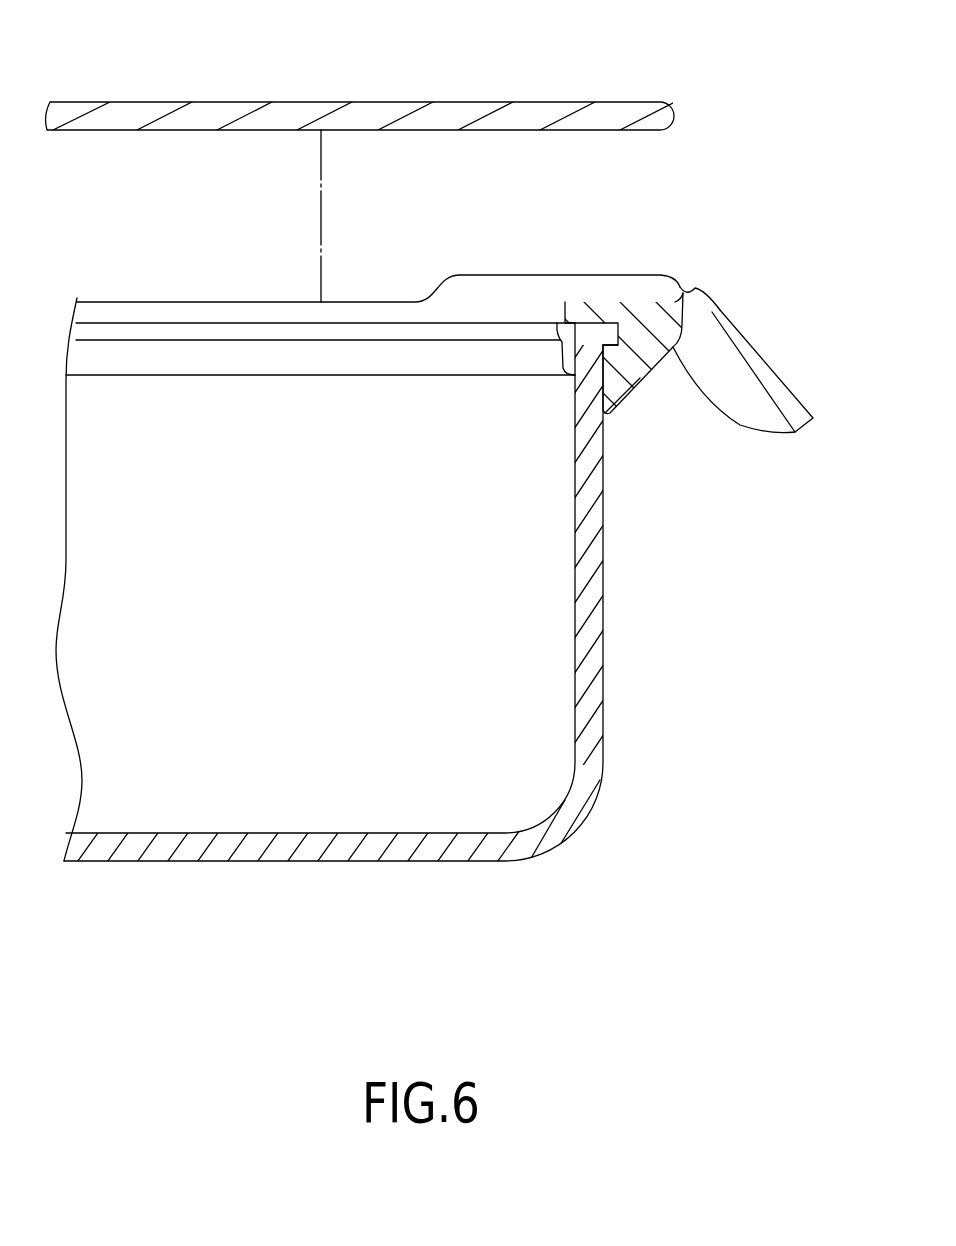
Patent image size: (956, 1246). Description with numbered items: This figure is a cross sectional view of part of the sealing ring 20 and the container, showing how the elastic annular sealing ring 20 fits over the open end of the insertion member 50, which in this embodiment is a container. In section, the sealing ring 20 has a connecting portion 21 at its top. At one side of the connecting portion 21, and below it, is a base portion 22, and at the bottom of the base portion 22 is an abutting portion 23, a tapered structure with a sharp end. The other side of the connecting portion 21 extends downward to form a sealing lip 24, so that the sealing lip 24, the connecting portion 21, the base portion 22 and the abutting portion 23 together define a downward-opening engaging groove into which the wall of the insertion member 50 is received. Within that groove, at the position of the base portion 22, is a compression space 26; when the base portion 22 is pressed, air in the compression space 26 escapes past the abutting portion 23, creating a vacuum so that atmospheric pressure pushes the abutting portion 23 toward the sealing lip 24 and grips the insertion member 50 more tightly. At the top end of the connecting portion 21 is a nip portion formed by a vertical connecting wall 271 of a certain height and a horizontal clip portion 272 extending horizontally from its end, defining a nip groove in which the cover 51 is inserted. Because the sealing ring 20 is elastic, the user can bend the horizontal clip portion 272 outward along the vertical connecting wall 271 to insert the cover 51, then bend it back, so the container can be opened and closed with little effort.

The sealing ring 20 is at (450, 265).
The connecting portion 21 is at (597, 312).
The base portion 22 is at (660, 343).
The abutting portion 23 is at (613, 390).
The sealing lip 24 is at (568, 352).
The compression space 26 is at (628, 330).
The vertical connecting wall 271 is at (692, 287).
The horizontal clip portion 272 is at (757, 353).
The insertion member 50 is at (575, 803).
The cover 51 is at (225, 112).